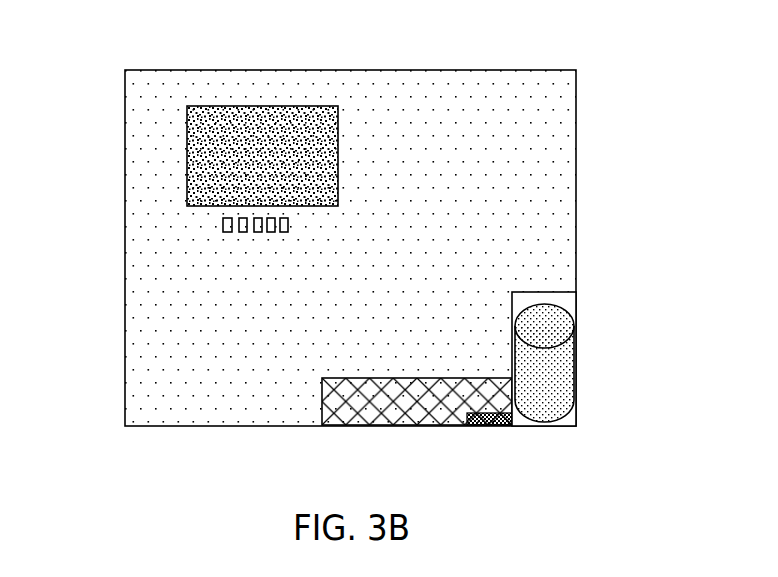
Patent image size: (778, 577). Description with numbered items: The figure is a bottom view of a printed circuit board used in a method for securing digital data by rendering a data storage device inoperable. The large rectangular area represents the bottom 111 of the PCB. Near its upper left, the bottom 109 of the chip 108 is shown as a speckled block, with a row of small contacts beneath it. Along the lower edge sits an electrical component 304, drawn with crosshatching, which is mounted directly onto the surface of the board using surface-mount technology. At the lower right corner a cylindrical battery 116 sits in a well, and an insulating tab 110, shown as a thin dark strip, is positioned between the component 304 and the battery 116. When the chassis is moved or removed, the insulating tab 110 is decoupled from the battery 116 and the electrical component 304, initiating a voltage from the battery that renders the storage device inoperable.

The chip 108 is at (187, 176).
The bottom of the chip 109 is at (262, 106).
The insulating tab 110 is at (478, 427).
The bottom of the PCB 111 is at (514, 175).
The battery 116 is at (576, 342).
The electrical component 304 is at (368, 417).